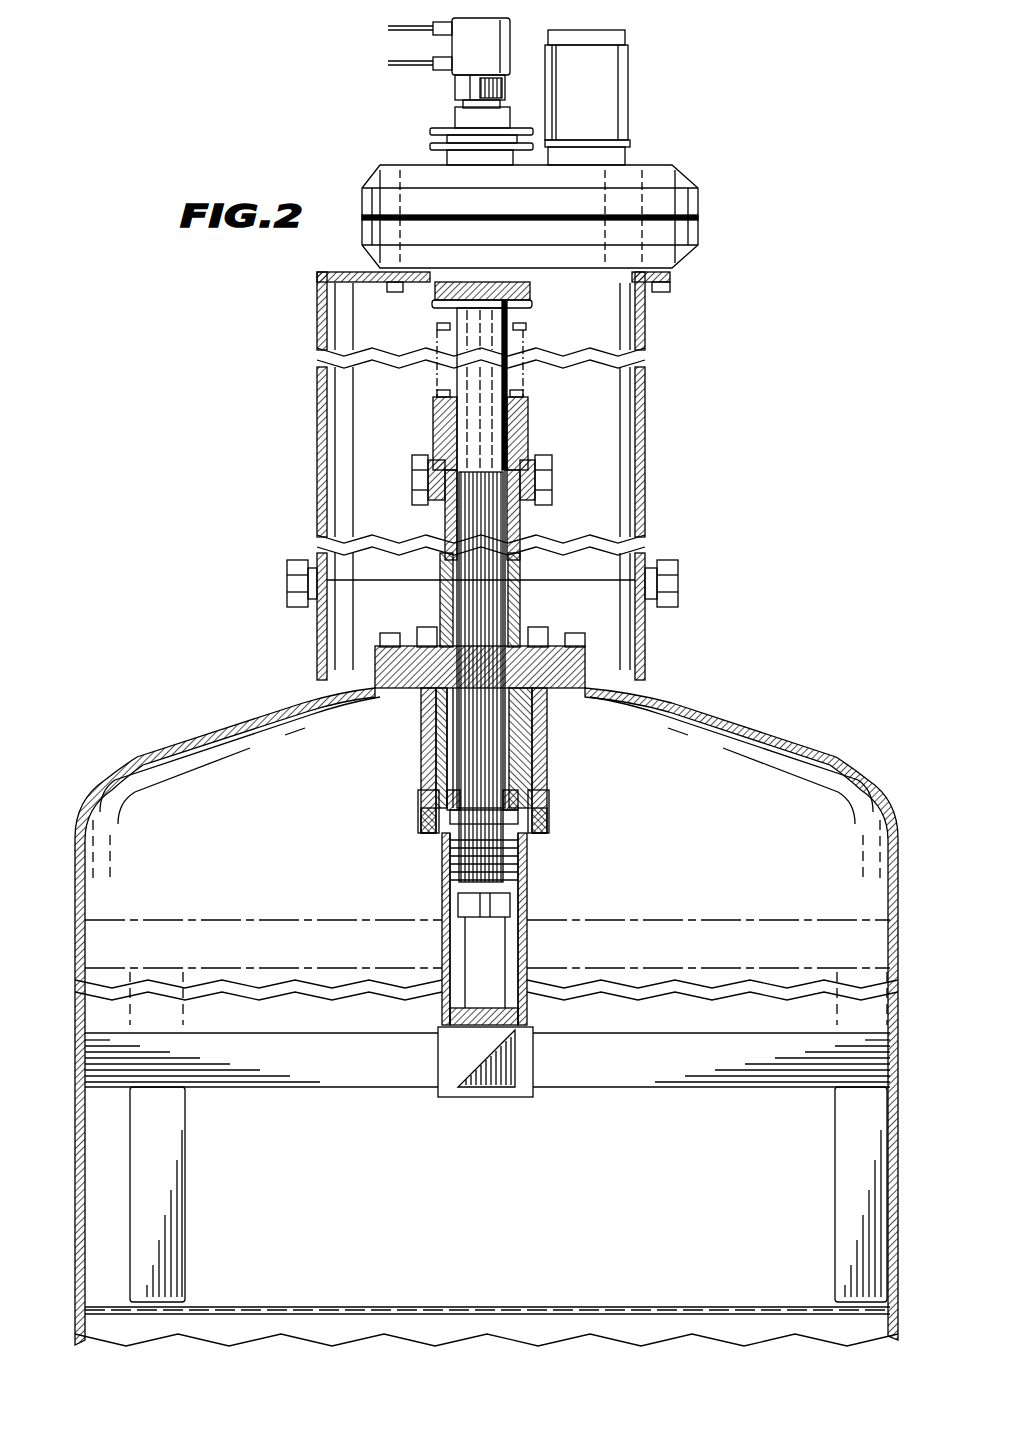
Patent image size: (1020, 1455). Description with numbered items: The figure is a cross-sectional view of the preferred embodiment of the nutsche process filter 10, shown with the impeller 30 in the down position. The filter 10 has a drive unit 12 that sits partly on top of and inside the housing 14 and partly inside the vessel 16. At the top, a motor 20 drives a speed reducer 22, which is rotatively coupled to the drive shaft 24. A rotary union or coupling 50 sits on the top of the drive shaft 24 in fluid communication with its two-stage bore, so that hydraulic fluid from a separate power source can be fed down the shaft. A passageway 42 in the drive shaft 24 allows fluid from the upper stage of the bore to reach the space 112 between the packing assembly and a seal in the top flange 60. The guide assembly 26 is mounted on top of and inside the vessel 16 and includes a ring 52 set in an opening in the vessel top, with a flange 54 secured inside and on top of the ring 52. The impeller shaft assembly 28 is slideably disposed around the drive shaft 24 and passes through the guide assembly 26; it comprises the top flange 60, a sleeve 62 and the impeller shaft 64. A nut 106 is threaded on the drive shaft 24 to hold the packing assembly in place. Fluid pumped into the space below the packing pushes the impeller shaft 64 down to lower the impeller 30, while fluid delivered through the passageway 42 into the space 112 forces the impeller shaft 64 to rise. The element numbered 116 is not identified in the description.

The nutsche process filter 10 is at (712, 443).
The drive unit 12 is at (499, 476).
The housing 14 is at (316, 315).
The vessel 16 is at (135, 757).
The motor 20 is at (615, 100).
The speed reducer 22 is at (698, 200).
The drive shaft 24 is at (520, 322).
The guide assembly 26 is at (487, 775).
The impeller shaft assembly 28 is at (533, 597).
The impeller 30 is at (627, 1083).
The passageway 42 is at (423, 793).
The rotary union or coupling 50 is at (465, 50).
The ring 52 is at (393, 692).
The flange 54 is at (423, 743).
The top flange 60 is at (476, 636).
The sleeve 62 is at (447, 517).
The impeller shaft 64 is at (523, 518).
The nut 106 is at (527, 897).
The space 112 is at (547, 797).
The float rod 116 is at (540, 929).